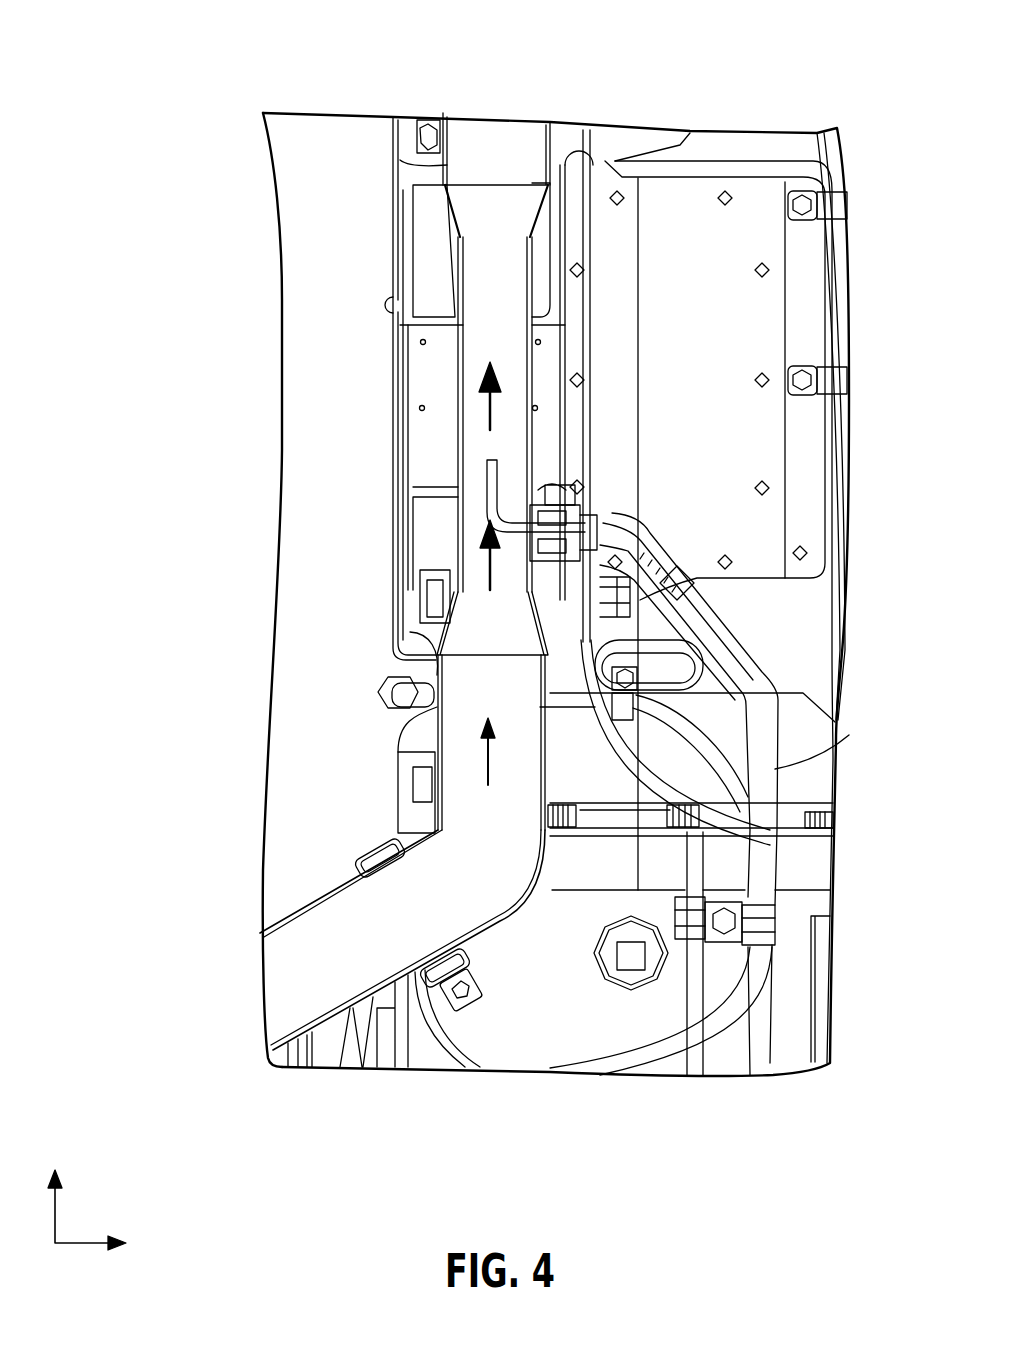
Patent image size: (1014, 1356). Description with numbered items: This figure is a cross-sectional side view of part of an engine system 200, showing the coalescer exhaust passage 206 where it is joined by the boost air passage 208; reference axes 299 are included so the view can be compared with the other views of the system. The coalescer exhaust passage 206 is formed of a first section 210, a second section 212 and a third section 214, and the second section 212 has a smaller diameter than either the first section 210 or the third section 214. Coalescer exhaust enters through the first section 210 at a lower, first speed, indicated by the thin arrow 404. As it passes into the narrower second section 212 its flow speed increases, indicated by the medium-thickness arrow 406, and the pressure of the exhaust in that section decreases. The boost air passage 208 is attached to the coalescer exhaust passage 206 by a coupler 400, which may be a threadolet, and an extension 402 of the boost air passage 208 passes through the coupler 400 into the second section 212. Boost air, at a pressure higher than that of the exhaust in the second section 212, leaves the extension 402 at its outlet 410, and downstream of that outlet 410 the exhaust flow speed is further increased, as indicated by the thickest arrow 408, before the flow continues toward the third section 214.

The engine system 200 is at (343, 76).
The coalescer exhaust passage 206 is at (588, 163).
The boost air passage 208 is at (780, 763).
The first section 210 is at (437, 802).
The second section 212 is at (455, 514).
The third section 214 is at (443, 168).
The reference axes 299 is at (92, 1132).
The coupler 400 is at (563, 500).
The extension 402 is at (487, 483).
The arrow 404 is at (485, 757).
The arrow 406 is at (420, 585).
The arrow 408 is at (490, 412).
The outlet 410 is at (495, 462).